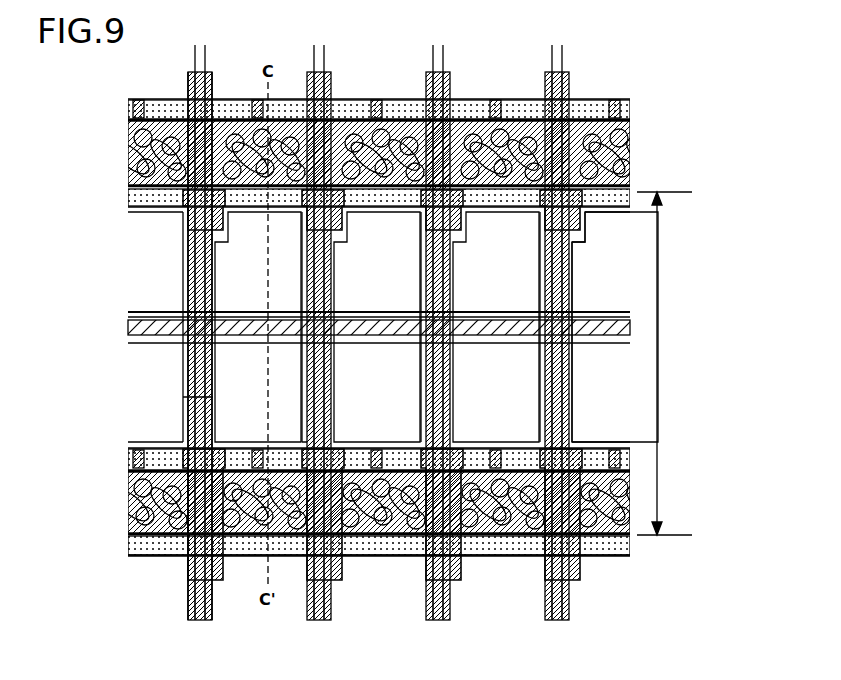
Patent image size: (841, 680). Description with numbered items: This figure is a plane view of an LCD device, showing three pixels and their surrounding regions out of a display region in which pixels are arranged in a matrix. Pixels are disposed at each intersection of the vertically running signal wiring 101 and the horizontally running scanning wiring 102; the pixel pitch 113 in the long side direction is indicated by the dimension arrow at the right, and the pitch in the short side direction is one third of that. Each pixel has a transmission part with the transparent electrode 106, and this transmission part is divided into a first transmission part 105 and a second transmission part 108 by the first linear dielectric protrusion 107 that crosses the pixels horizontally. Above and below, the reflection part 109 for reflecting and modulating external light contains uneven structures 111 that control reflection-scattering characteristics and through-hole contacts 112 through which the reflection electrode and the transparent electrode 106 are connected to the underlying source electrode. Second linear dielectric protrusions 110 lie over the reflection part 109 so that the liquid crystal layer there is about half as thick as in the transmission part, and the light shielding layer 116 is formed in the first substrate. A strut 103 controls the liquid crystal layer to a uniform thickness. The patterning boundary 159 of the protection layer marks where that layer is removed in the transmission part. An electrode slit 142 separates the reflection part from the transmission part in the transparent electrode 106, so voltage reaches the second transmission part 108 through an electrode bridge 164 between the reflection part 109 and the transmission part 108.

The signal wiring 101 is at (306, 595).
The scanning wiring 102 is at (362, 553).
The strut 103 is at (537, 538).
The first transmission part 105 is at (185, 241).
The transparent electrode 106 is at (190, 262).
The first linear dielectric protrusion 107 is at (121, 338).
The second transmission part 108 is at (183, 397).
The reflection part 109 is at (128, 535).
The second linear dielectric protrusion 110 is at (120, 472).
The uneven structures 111 is at (378, 100).
The through-hole contacts 112 is at (495, 103).
The pixel pitch 113 is at (657, 393).
The light shielding layer 116 is at (168, 312).
The electrode slit 142 is at (565, 438).
The patterning boundary of the protection layer 159 is at (573, 298).
The electrode bridge 164 is at (395, 553).